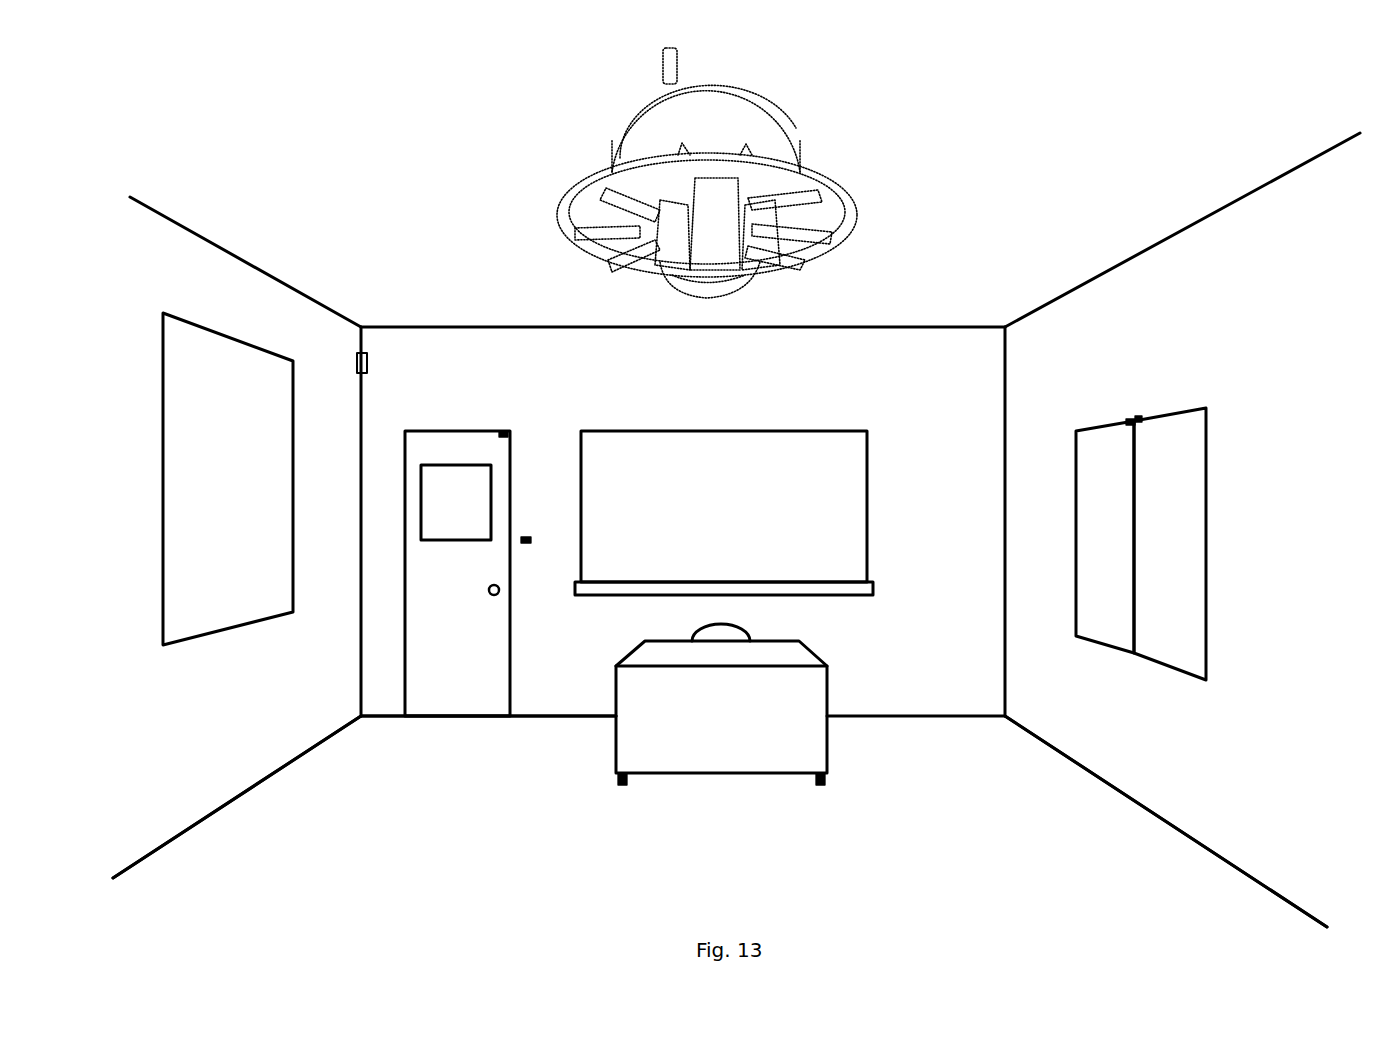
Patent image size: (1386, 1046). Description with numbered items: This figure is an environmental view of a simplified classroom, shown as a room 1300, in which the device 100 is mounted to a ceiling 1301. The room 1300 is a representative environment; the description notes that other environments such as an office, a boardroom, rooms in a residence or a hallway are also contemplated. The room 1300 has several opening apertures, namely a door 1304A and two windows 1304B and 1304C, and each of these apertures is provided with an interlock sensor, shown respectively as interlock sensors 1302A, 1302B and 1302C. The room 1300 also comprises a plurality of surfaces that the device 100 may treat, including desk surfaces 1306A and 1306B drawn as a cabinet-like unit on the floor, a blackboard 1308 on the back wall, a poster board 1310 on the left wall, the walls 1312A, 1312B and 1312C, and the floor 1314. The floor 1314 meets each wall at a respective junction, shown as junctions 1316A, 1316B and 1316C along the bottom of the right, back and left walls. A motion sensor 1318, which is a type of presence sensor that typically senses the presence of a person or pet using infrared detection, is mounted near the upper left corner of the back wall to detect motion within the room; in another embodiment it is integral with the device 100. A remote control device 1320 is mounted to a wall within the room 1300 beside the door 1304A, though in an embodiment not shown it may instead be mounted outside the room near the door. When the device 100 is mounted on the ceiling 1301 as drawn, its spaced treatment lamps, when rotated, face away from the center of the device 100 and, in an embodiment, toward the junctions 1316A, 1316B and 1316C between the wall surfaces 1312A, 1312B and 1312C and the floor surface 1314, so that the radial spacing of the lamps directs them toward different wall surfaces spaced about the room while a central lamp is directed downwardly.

The room 1300 is at (166, 86).
The device 100 is at (640, 101).
The ceiling 1301 is at (916, 127).
The interlock sensor 1302A is at (508, 430).
The interlock sensor 1302B is at (1128, 421).
The interlock sensor 1302C is at (1139, 420).
The door 1304A is at (490, 661).
The window 1304B is at (1110, 637).
The window 1304C is at (1162, 663).
The desk surface 1306A is at (798, 657).
The desk surface 1306B is at (754, 734).
The blackboard 1308 is at (751, 527).
The poster board 1310 is at (256, 491).
The wall 1312A is at (1299, 839).
The wall 1312B is at (956, 546).
The wall 1312C is at (263, 712).
The floor 1314 is at (748, 852).
The junction 1316A is at (1140, 802).
The junction 1316B is at (553, 720).
The junction 1316C is at (265, 782).
The motion sensor 1318 is at (367, 360).
The remote control device 1320 is at (523, 537).